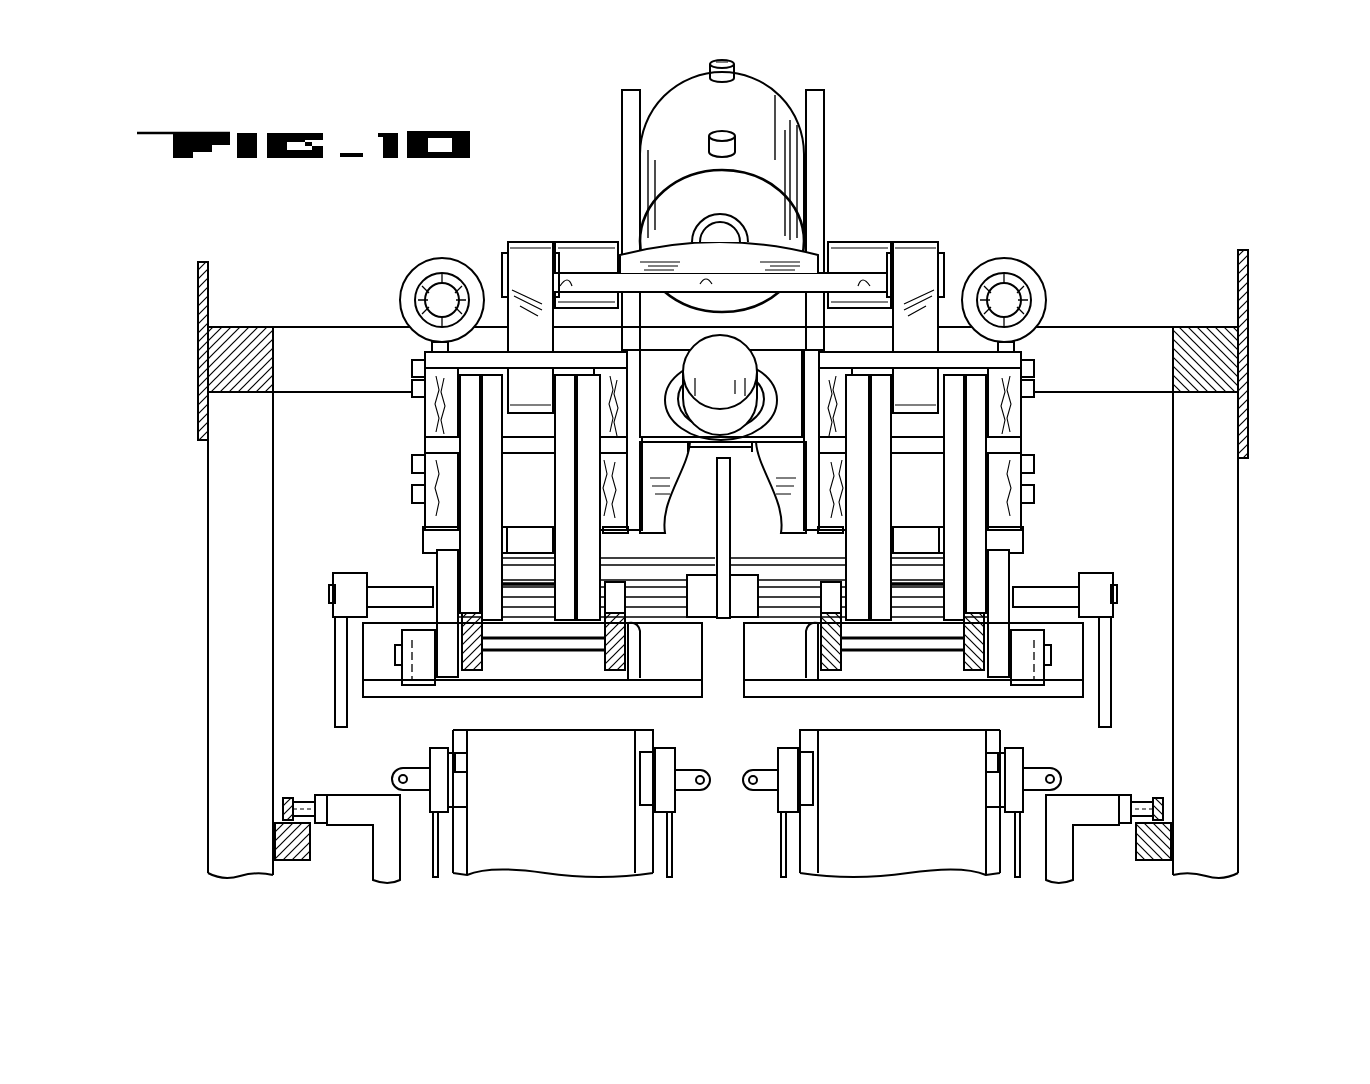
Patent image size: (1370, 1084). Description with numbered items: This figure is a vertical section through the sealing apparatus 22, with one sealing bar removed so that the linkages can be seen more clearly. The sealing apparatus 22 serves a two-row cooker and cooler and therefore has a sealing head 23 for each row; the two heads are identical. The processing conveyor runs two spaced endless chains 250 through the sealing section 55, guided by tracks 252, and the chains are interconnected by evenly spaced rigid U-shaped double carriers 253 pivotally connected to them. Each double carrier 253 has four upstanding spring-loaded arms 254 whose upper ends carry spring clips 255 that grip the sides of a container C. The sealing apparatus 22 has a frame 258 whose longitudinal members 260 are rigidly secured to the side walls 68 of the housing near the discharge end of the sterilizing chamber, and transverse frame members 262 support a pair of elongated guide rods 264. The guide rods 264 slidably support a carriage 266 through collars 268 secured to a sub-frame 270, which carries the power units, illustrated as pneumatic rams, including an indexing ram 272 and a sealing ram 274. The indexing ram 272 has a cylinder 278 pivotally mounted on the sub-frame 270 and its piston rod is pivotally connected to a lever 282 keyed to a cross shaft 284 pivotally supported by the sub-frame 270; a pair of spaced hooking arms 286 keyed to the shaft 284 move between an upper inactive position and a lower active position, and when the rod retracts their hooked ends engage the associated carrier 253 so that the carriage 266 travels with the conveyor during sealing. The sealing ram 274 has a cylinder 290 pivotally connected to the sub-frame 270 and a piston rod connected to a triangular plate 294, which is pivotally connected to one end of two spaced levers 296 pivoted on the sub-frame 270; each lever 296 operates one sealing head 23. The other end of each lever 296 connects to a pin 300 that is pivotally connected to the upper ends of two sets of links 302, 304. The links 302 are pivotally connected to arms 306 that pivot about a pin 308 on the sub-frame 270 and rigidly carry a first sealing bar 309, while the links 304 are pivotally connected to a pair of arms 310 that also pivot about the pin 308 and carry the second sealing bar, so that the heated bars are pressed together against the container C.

The sealing apparatus 22 is at (937, 149).
The sealing head 23 is at (378, 505).
The cutter assembly 55 is at (1020, 217).
The side walls 68 is at (198, 290).
The endless chains 250 is at (290, 806).
The tracks 252 is at (292, 835).
The double carriers 253 is at (343, 800).
The arms 254 is at (440, 845).
The spring clips 255 is at (450, 792).
The frame 258 is at (208, 486).
The longitudinal members 260 is at (215, 362).
The transverse frame members 262 is at (1083, 327).
The guide rods 264 is at (420, 294).
The carriage 266 is at (423, 432).
The collars 268 is at (440, 260).
The sub-frame 270 is at (1030, 534).
The indexing ram 272 is at (742, 390).
The sealing ram 274 is at (773, 82).
The cylinder 278 is at (752, 352).
The lever 282 is at (715, 550).
The cross shaft 284 is at (400, 585).
The hooking arms 286 is at (335, 635).
The cylinder 290 is at (805, 150).
The triangular plate 294 is at (800, 250).
The levers 296 is at (530, 244).
The pin 300 is at (440, 405).
The links 302 is at (566, 448).
The links 304 is at (580, 553).
The arms 306 is at (442, 560).
The pin 308 is at (555, 680).
The first sealing bar 309 is at (410, 698).
The arms 310 is at (615, 625).
The container C is at (556, 764).